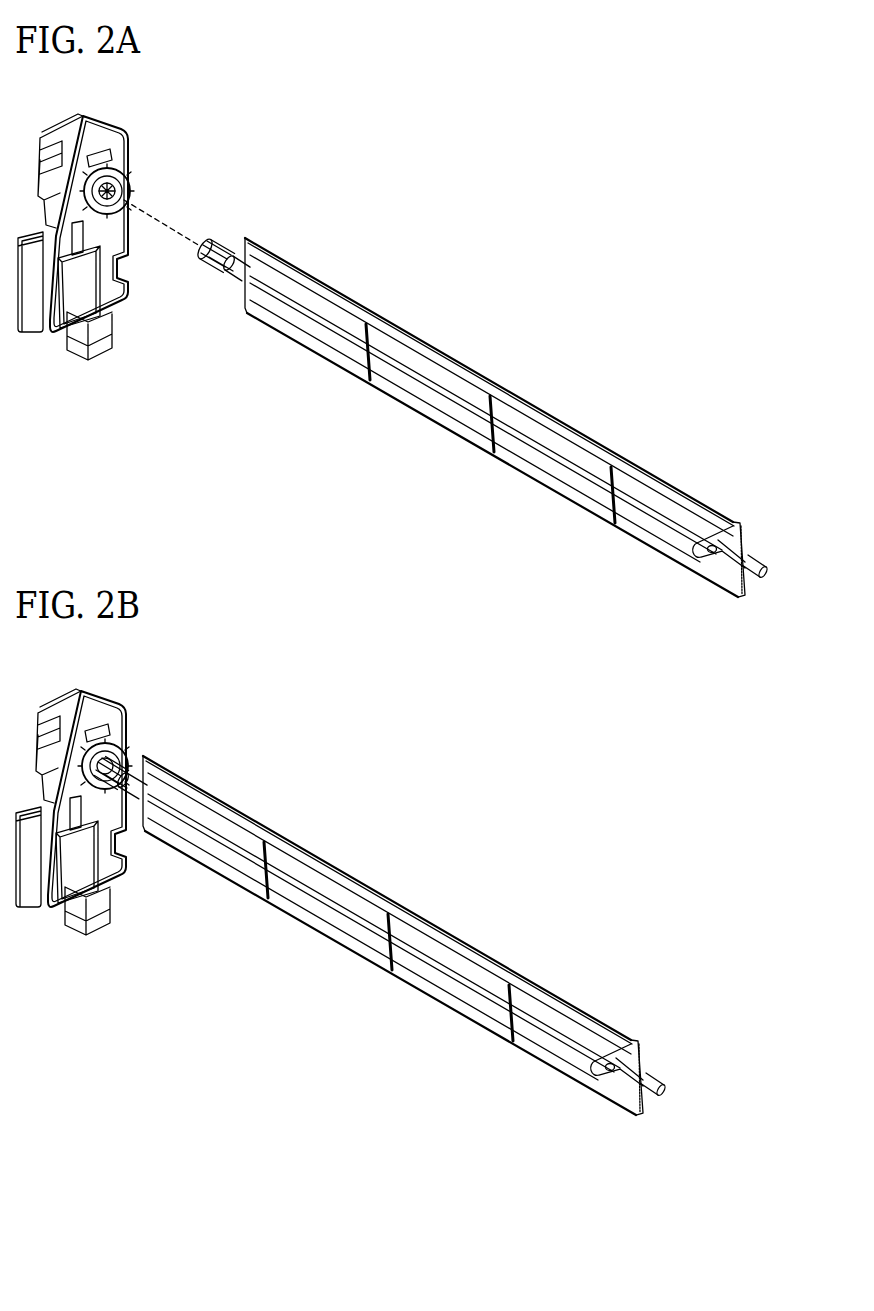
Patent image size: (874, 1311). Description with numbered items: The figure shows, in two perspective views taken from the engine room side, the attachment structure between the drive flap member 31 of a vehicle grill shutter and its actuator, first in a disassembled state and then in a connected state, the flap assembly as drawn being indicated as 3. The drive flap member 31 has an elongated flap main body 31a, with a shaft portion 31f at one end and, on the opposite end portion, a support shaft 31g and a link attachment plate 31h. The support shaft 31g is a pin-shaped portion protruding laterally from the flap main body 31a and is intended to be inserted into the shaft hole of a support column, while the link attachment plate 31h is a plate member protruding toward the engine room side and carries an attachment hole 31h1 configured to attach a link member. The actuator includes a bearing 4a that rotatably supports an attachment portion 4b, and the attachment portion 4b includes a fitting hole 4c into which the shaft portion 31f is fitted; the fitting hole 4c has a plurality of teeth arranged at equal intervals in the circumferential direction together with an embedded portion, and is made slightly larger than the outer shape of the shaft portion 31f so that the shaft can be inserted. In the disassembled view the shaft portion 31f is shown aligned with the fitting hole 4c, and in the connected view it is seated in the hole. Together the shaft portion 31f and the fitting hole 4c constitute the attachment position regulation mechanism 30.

In FIG. 2A, the cleaning blade unit 3 is at (490, 429).
In FIG. 2B, the cleaning blade unit 3 is at (390, 950).
In FIG. 2A, the bearing 4a is at (133, 187).
In FIG. 2B, the bearing 4a is at (105, 722).
In FIG. 2A, the attachment portion 4b is at (137, 202).
In FIG. 2B, the attachment portion 4b is at (123, 728).
In FIG. 2A, the fitting hole 4c is at (132, 201).
In FIG. 2B, the fitting hole 4c is at (150, 729).
In FIG. 2A, the attachment position regulation mechanism 30 is at (230, 169).
In FIG. 2B, the attachment position regulation mechanism 30 is at (174, 719).
In FIG. 2A, the drive flap member 31 is at (515, 453).
In FIG. 2B, the drive flap member 31 is at (414, 970).
In FIG. 2A, the flap main body 31a is at (412, 328).
In FIG. 2B, the flap main body 31a is at (387, 905).
In FIG. 2A, the shaft portion 31f is at (225, 251).
In FIG. 2B, the shaft portion 31f is at (128, 773).
In FIG. 2A, the support shaft 31g is at (763, 578).
In FIG. 2B, the support shaft 31g is at (663, 1128).
In FIG. 2A, the link attachment plate 31h is at (714, 542).
In FIG. 2B, the link attachment plate 31h is at (611, 1060).
In FIG. 2A, the attachment hole 31h1 is at (716, 556).
In FIG. 2B, the attachment hole 31h1 is at (604, 1117).